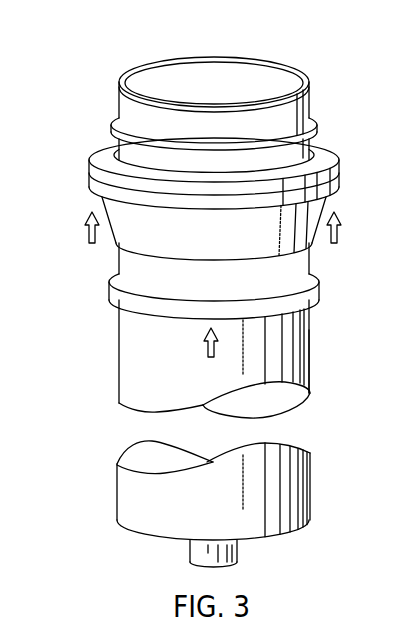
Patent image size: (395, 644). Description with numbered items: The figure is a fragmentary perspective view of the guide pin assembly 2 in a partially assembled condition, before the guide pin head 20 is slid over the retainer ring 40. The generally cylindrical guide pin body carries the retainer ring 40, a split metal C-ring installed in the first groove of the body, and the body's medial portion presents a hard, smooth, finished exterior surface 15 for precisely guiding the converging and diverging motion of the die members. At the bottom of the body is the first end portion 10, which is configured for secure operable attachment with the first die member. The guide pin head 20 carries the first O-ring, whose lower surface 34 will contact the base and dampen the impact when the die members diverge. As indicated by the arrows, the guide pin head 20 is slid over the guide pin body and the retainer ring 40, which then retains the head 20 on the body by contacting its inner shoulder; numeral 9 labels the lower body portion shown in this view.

The guide pin assembly 2 is at (285, 53).
The retainer ring 40 is at (116, 115).
The guide pin head 20 is at (84, 159).
The lower surface of the first O-ring 34 is at (88, 190).
The cylindrical body 9 is at (118, 375).
The exterior surface 15 is at (310, 375).
The first end portion 10 is at (310, 488).